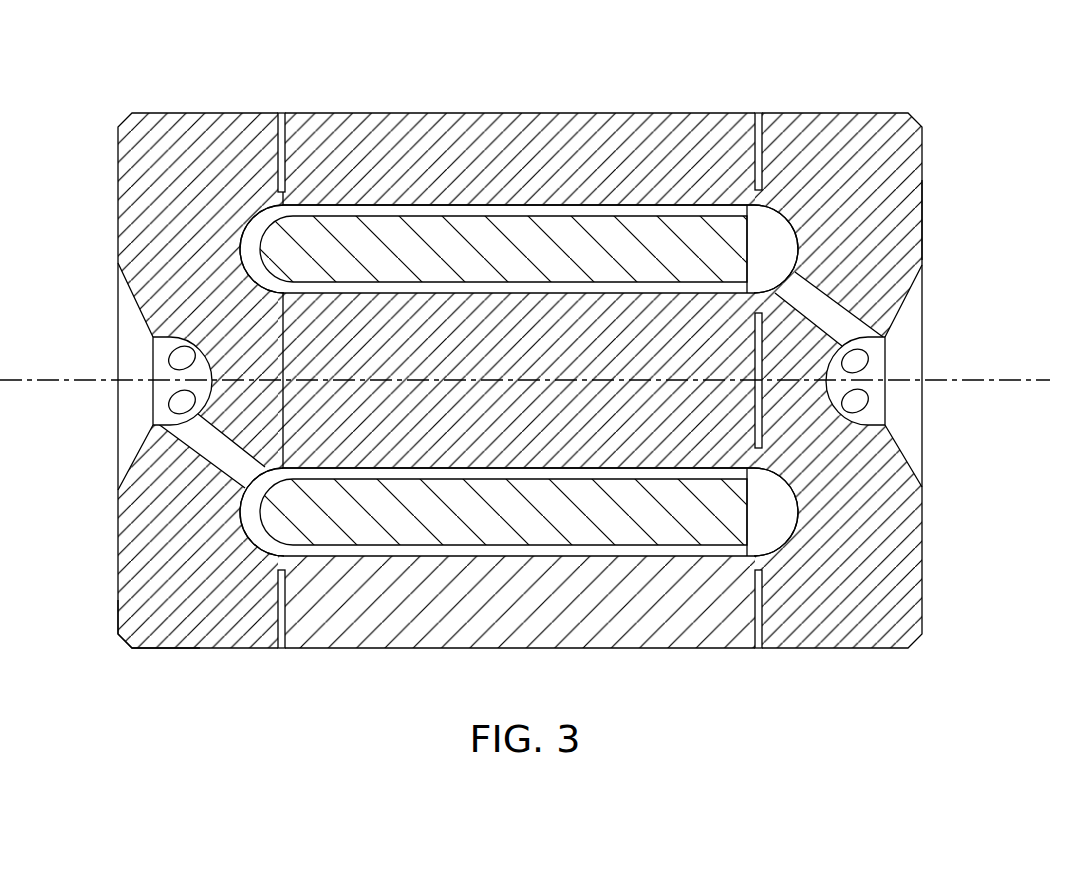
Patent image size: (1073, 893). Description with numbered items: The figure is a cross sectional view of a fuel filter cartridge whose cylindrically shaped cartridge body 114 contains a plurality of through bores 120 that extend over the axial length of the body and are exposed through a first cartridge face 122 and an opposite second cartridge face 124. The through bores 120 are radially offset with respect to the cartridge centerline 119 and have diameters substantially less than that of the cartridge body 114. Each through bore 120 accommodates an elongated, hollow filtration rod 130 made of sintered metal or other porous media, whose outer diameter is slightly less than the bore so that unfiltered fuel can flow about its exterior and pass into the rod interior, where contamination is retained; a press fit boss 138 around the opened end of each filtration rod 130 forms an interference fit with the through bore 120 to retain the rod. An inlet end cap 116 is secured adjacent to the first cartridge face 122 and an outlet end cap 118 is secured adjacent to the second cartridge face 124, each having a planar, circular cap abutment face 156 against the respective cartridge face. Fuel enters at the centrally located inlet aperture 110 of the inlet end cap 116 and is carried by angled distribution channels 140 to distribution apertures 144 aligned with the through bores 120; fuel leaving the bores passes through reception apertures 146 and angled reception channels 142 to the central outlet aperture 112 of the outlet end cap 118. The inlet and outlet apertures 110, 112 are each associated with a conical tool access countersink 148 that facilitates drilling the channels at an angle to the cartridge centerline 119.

The inlet aperture 110 is at (128, 398).
The outlet aperture 112 is at (880, 400).
The cartridge body 114 is at (616, 113).
The inlet end cap 116 is at (130, 553).
The outlet end cap 118 is at (922, 223).
The cartridge centerline 119 is at (1005, 378).
The through bores 120 is at (540, 205).
The first cartridge face 122 is at (282, 148).
The second cartridge face 124 is at (762, 150).
The filtration rods 130 is at (327, 252).
The press fit boss 138 is at (683, 205).
The distribution channels 140 is at (220, 300).
The reception channels 142 is at (832, 318).
The distribution aperture 144 is at (252, 253).
The reception aperture 146 is at (787, 237).
The conical tool access countersink 148 is at (137, 313).
The cap abutment face 156 is at (278, 620).